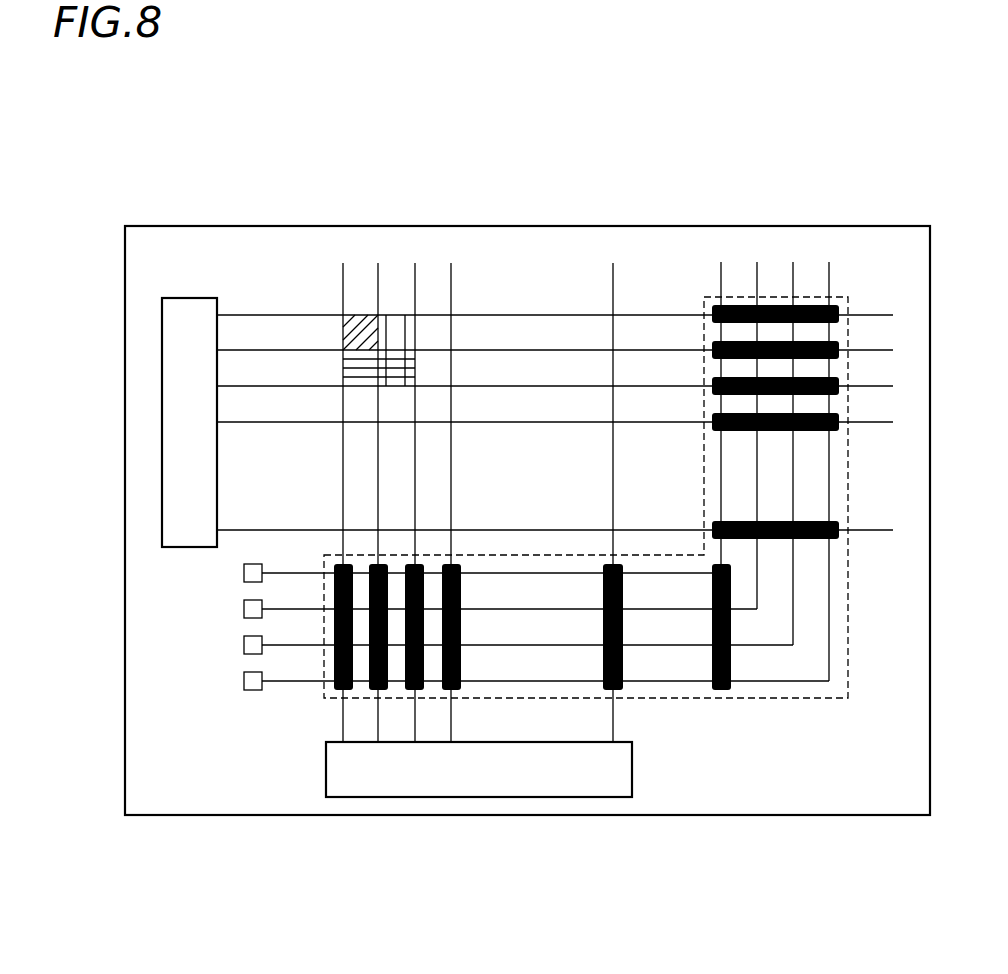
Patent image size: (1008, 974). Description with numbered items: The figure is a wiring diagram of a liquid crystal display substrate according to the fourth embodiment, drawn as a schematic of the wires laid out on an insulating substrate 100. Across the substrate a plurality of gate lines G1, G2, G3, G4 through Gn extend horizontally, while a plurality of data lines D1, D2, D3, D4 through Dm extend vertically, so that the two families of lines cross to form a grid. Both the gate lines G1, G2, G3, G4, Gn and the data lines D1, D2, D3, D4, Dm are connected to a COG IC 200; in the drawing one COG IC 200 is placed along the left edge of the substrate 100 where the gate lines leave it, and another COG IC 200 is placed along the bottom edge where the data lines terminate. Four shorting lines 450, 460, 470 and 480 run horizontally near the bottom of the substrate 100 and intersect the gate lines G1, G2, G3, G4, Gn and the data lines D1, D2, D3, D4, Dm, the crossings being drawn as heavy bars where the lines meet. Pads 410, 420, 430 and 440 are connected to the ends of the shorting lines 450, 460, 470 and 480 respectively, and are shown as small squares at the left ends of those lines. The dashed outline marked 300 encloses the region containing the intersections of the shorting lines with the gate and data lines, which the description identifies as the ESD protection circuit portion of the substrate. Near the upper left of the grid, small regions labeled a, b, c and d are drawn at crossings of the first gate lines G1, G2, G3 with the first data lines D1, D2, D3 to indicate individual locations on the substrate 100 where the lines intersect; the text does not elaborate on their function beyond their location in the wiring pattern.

The insulating substrate 100 is at (515, 226).
The COG IC 200 is at (162, 430).
The inspection circuit region 300 is at (811, 698).
The pad 410 is at (244, 573).
The pad 420 is at (244, 609).
The pad 430 is at (244, 645).
The pad 440 is at (244, 681).
The shorting line 450 is at (308, 573).
The shorting line 460 is at (272, 609).
The shorting line 470 is at (305, 645).
The shorting line 480 is at (268, 681).
The pixel a is at (362, 322).
The pixel b is at (397, 318).
The pixel c is at (350, 368).
The pixel d is at (397, 386).
The data line D1 is at (345, 489).
The data line D2 is at (381, 489).
The data line D3 is at (417, 489).
The data line D4 is at (453, 489).
The data line Dm is at (617, 489).
The gate line G1 is at (555, 302).
The gate line G2 is at (555, 337).
The gate line G3 is at (555, 373).
The gate line G4 is at (555, 409).
The gate line Gn is at (555, 516).